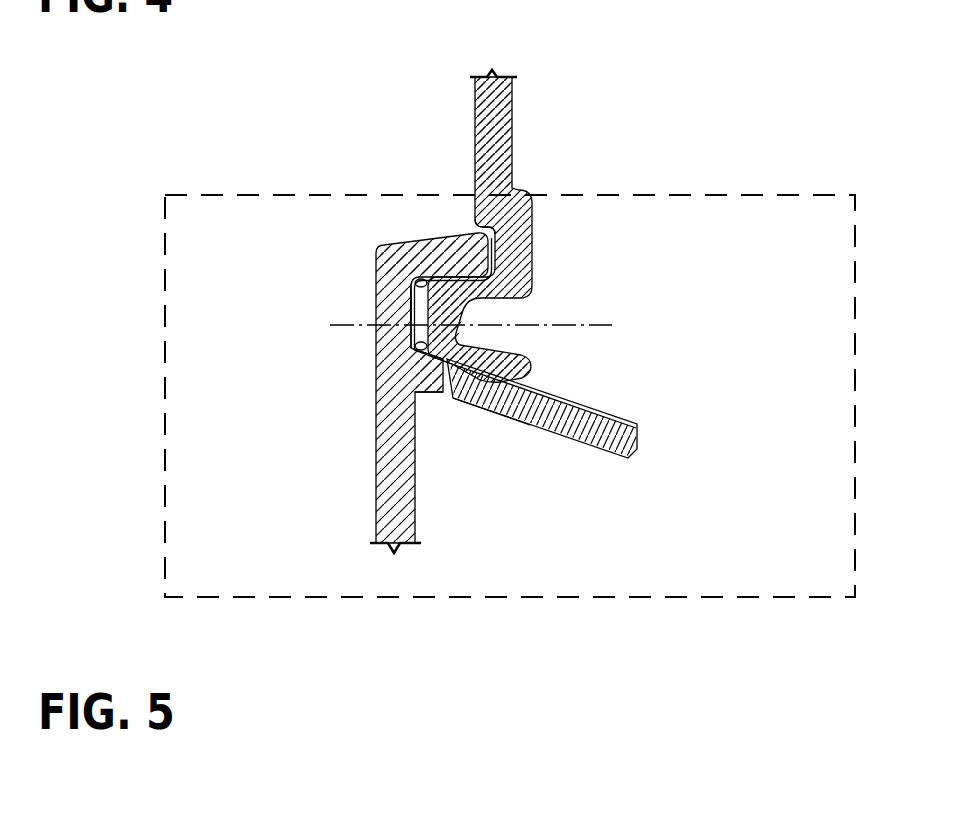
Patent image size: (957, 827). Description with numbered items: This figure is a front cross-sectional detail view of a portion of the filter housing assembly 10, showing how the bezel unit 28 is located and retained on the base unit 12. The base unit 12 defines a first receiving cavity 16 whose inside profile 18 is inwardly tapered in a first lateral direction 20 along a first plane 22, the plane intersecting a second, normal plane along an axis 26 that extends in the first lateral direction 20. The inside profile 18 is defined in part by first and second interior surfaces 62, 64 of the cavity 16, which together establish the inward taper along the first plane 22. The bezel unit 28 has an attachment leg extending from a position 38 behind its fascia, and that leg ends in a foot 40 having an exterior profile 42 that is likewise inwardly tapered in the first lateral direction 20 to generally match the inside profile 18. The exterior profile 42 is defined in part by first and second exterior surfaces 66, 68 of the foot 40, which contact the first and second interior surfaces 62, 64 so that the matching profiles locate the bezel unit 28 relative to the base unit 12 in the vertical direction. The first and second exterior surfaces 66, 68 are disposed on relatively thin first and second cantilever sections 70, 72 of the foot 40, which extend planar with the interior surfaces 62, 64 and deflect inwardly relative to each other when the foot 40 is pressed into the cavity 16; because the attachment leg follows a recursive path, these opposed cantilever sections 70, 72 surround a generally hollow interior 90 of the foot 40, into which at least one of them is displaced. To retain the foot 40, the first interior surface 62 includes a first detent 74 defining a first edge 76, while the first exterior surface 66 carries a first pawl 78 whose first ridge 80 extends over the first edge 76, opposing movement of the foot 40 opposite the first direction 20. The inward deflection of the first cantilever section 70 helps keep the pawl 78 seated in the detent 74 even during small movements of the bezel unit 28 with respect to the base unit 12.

The filter housing assembly 10 is at (565, 62).
The base unit 12 is at (378, 552).
The first receiving cavity 16 is at (410, 348).
The inside profile 18 is at (405, 300).
The first lateral direction 20 is at (658, 498).
The first plane 22 is at (593, 598).
The axis 26 is at (609, 327).
The bezel unit 28 is at (600, 313).
The position 38 is at (493, 138).
The foot 40 is at (553, 258).
The exterior profile 42 is at (410, 289).
The first interior surface 62 is at (440, 390).
The second interior surface 64 is at (432, 238).
The first exterior surface 66 is at (450, 398).
The second exterior surface 68 is at (467, 232).
The first cantilever section 70 is at (515, 345).
The second cantilever section 72 is at (483, 298).
The first detent 74 is at (478, 404).
The first edge 76 is at (487, 417).
The first pawl 78 is at (458, 405).
The first ridge 80 is at (514, 410).
The hollow interior 90 is at (513, 333).